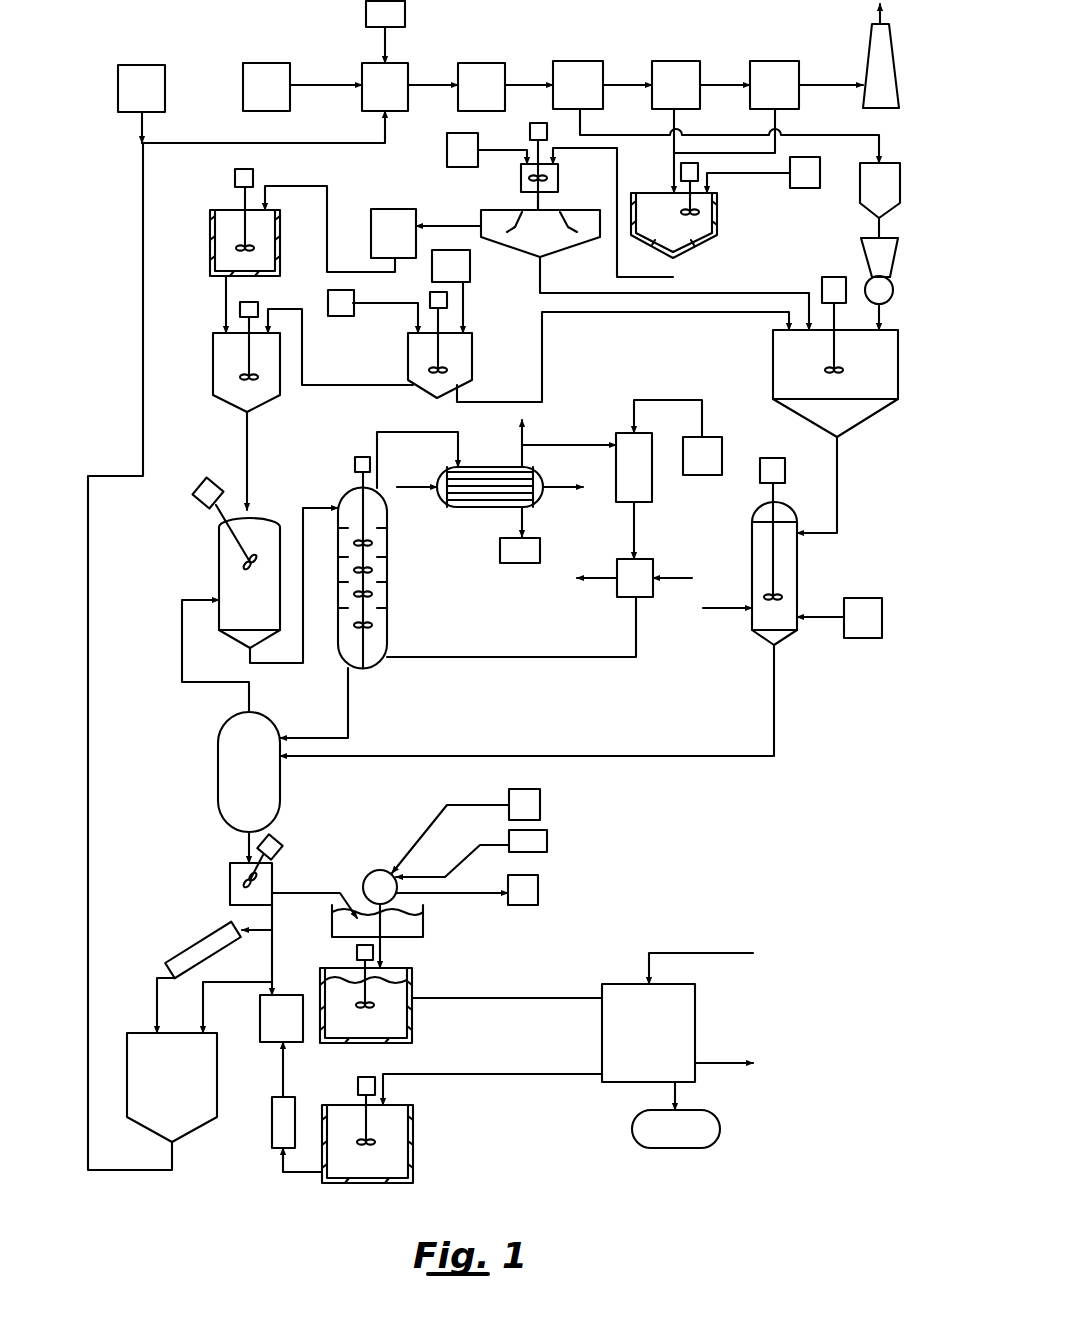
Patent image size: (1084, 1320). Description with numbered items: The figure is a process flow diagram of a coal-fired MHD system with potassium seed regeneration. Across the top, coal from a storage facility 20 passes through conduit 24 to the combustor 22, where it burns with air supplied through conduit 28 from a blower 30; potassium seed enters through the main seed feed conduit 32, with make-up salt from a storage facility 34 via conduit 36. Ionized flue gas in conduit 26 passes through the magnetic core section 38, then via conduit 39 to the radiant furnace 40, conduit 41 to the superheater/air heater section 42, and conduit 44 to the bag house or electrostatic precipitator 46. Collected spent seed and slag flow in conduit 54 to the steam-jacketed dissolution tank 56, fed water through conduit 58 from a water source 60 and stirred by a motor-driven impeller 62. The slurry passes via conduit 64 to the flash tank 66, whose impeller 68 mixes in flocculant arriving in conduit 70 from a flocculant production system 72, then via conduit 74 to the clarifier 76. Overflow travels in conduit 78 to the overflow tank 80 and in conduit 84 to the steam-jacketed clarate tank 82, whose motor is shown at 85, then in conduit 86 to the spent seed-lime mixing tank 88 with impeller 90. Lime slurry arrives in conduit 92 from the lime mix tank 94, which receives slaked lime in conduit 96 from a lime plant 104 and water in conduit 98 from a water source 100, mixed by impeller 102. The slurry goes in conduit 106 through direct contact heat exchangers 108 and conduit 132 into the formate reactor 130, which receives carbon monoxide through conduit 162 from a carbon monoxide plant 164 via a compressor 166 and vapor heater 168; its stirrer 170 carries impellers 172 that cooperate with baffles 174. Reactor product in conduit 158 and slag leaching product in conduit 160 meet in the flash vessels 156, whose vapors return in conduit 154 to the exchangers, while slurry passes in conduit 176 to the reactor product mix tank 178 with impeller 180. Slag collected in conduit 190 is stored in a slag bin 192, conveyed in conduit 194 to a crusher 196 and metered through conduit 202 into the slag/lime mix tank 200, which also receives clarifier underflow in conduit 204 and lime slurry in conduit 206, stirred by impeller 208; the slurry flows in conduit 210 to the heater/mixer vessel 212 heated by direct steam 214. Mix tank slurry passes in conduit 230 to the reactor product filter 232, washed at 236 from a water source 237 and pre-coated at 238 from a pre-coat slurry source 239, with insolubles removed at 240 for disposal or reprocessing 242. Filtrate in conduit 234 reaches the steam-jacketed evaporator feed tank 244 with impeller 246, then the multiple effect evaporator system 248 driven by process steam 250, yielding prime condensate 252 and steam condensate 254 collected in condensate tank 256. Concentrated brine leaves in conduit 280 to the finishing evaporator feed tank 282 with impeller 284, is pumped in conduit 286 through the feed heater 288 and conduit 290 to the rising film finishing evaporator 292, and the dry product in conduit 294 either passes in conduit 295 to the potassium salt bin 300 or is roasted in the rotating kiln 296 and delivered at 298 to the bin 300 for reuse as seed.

The storage facility 20 is at (252, 62).
The combustor 22 is at (360, 97).
The conduit 24 is at (305, 84).
The conduit 26 is at (426, 84).
The conduit 28 is at (385, 40).
The blower 30 is at (406, 11).
The main seed feed conduit 32 is at (212, 141).
The storage facility 34 is at (152, 64).
The conduit 36 is at (145, 126).
The magnetic core section 38 is at (486, 62).
The conduit 39 is at (518, 84).
The radiant furnace 40 is at (570, 60).
The conduit 41 is at (615, 84).
The superheater/air heater section 42 is at (668, 60).
The conduit 44 is at (717, 84).
The bag house or electrostatic precipitator 46 is at (771, 60).
The conduit 54 is at (673, 151).
The steam-jacketed dissolution tank 56 is at (718, 221).
The conduit 58 is at (760, 174).
The water source 60 is at (805, 188).
The motor-driven impeller 62 is at (673, 194).
The conduit 64 is at (616, 161).
The flash tank 66 is at (519, 181).
The motor-driven impeller 68 is at (516, 170).
The conduit 70 is at (516, 148).
The flocculant production system 72 is at (446, 148).
The conduit 74 is at (547, 199).
The clarifier 76 is at (560, 248).
The conduit 78 is at (437, 224).
The overflow tank 80 is at (392, 208).
The steam-jacketed clarate tank 82 is at (210, 236).
The conduit 84 is at (326, 240).
The agitator motor 85 is at (240, 196).
The conduit 86 is at (226, 306).
The spent seed-lime mixing tank 88 is at (213, 342).
The motor-driven impeller 90 is at (248, 358).
The conduit 92 is at (366, 386).
The lime mix tank 94 is at (473, 368).
The conduit 96 is at (466, 296).
The conduit 98 is at (379, 302).
The water source 100 is at (341, 316).
The motor-driven impeller 102 is at (440, 349).
The lime plant 104 is at (471, 266).
The conduit 106 is at (246, 441).
The direct contact heat exchangers 108 is at (258, 508).
The formate reactor 130 is at (388, 522).
The conduit 132 is at (312, 507).
The conduit 154 is at (181, 613).
The flash vessels 156 is at (218, 742).
The conduit 158 is at (349, 698).
The conduit 160 is at (421, 752).
The conduit 162 is at (466, 657).
The carbon monoxide plant 164 is at (723, 441).
The multi-stage carbon monoxide compressor 166 is at (653, 491).
The carbon monoxide vapor heater 168 is at (656, 559).
The motor-driven stirrer 170 is at (354, 463).
The impellers 172 is at (370, 545).
The baffles 174 is at (388, 600).
The conduit 176 is at (246, 843).
The reactor product mix tank 178 is at (230, 879).
The motor-driven impeller 180 is at (282, 866).
The conduit 190 is at (882, 150).
The slag bin 192 is at (900, 196).
The conduit 194 is at (876, 227).
The crusher 196 is at (899, 259).
The slag/lime mix tank 200 is at (899, 352).
The conduit 202 is at (896, 313).
The conduit 204 is at (706, 292).
The conduit 206 is at (684, 313).
The motor-driven impeller 208 is at (830, 343).
The conduit 210 is at (839, 471).
The direct contact heater/mixer vessel 212 is at (798, 560).
The direct steam 214 is at (719, 611).
The conduit 230 is at (296, 896).
The reactor product filter 232 is at (411, 938).
The conduit 234 is at (413, 969).
The wash solution 236 is at (431, 812).
The water source 237 is at (541, 794).
The filter pre-coat 238 is at (500, 852).
The pre-coat slurry source 239 is at (548, 841).
The insolubles removal 240 is at (470, 894).
The disposal or reprocessing 242 is at (539, 884).
The steam-jacketed evaporator feed tank 244 is at (413, 1018).
The motor-driven impeller 246 is at (327, 966).
The multiple effect evaporator system 248 is at (618, 984).
The process steam 250 is at (701, 953).
The prime condensate 252 is at (721, 1062).
The steam condensate 254 is at (692, 1101).
The condensate tank 256 is at (633, 1125).
The conduit 280 is at (510, 1076).
The steam-jacketed finishing evaporator feed tank 282 is at (414, 1165).
The motor-driven impeller 284 is at (396, 1118).
The conduit 286 is at (283, 1174).
The feed heater 288 is at (271, 1105).
The conduit 290 is at (284, 1070).
The rising film finishing evaporator 292 is at (266, 1031).
The conduit 294 is at (273, 926).
The conduit 295 is at (236, 984).
The rotating kiln 296 is at (200, 936).
The kiln outlet 298 is at (156, 1000).
The potassium salt bin 300 is at (196, 1128).